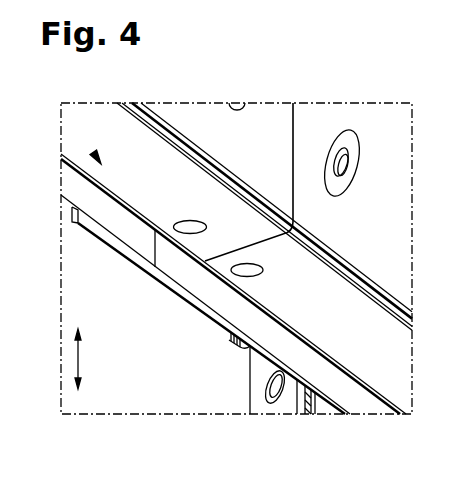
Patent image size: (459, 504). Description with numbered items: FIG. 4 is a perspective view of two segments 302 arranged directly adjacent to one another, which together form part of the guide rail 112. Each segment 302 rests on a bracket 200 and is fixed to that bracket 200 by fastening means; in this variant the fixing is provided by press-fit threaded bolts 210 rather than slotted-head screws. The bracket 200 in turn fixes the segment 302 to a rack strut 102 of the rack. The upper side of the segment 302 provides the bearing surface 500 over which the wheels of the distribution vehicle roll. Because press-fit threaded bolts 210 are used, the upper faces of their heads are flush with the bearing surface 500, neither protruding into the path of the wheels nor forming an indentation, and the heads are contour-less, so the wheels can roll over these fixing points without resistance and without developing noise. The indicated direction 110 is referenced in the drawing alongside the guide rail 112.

The guide rail 112 is at (93, 152).
The segment 302 is at (80, 193).
The press-fit threaded bolt 210 is at (247, 268).
The bearing surface 500 is at (332, 313).
The bracket 200 is at (203, 317).
The vertical direction 110 is at (80, 358).
The rack strut 102 is at (260, 400).